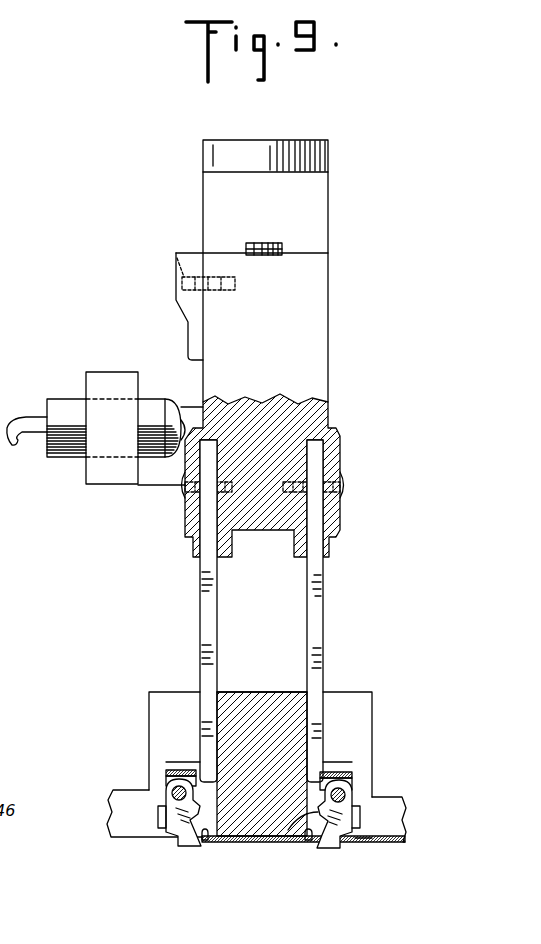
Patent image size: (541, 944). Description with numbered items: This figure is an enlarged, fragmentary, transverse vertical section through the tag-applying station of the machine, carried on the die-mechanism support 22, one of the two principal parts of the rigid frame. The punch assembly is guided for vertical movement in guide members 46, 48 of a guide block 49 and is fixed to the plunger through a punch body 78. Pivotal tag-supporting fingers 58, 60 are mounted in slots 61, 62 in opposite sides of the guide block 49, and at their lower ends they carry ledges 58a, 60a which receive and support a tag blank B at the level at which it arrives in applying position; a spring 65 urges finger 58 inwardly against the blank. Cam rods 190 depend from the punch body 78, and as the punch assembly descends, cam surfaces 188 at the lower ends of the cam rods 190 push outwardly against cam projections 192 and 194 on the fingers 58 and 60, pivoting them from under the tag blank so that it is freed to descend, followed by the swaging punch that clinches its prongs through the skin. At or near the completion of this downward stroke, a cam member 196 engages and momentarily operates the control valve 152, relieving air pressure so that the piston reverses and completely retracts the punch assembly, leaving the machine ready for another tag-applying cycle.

The die-mechanism support 22 is at (196, 391).
The cam member 196 is at (184, 300).
The punch body 78 is at (307, 409).
The control valve 152 is at (152, 450).
The cam rods 190 is at (306, 609).
The cam projection 192 is at (215, 810).
The guide block 49 is at (265, 692).
The cam projection 194 is at (288, 830).
The guide member 46 is at (162, 718).
The guide member 48 is at (357, 718).
The cam surfaces 188 is at (200, 760).
The slot 61 is at (166, 781).
The slot 62 is at (352, 790).
The tag-supporting finger 58 is at (182, 826).
The spring 65 is at (160, 818).
The ledge 58a is at (205, 847).
The position B is at (233, 843).
The tag-supporting finger 60 is at (335, 845).
The ledge 60a is at (310, 843).